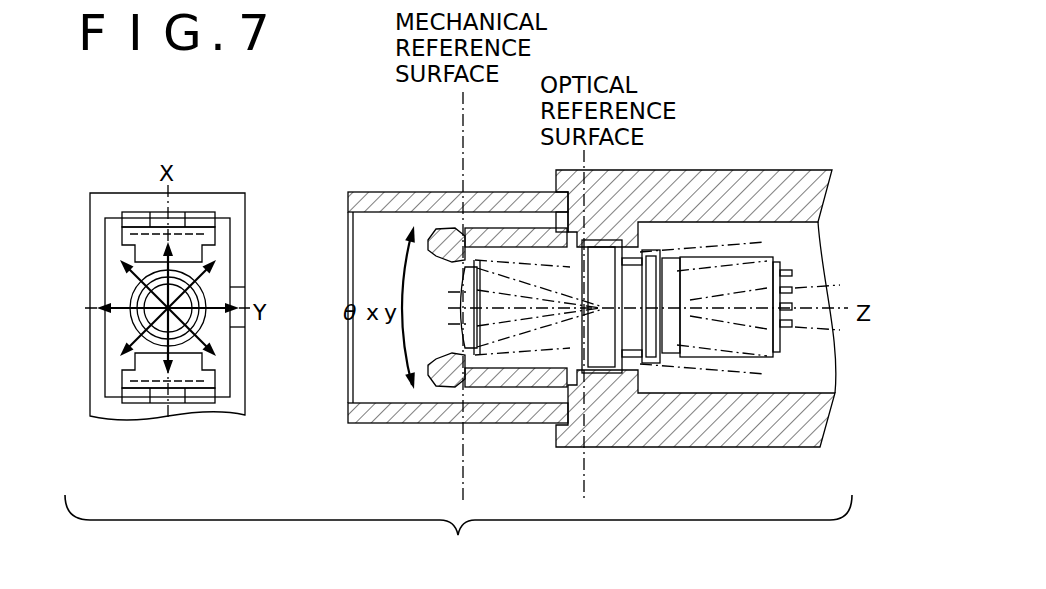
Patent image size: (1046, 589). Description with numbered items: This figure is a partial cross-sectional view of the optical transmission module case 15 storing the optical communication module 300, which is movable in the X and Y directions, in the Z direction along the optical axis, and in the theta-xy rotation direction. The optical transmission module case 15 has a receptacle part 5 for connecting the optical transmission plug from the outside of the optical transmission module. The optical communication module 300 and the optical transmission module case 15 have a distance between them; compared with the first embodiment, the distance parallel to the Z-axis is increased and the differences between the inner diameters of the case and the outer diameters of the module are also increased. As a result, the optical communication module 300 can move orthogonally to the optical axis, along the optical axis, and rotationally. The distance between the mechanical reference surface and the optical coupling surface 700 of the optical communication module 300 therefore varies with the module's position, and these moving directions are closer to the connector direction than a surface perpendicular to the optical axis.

The receptacle part 5 is at (382, 388).
The optical transmission module case 15 is at (205, 193).
The optical communication module 300 is at (152, 322).
The optical coupling surface 700 is at (585, 308).